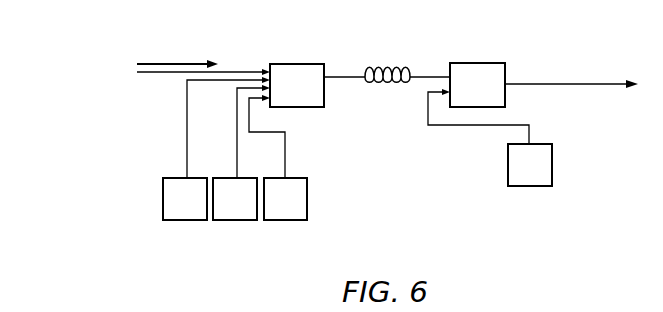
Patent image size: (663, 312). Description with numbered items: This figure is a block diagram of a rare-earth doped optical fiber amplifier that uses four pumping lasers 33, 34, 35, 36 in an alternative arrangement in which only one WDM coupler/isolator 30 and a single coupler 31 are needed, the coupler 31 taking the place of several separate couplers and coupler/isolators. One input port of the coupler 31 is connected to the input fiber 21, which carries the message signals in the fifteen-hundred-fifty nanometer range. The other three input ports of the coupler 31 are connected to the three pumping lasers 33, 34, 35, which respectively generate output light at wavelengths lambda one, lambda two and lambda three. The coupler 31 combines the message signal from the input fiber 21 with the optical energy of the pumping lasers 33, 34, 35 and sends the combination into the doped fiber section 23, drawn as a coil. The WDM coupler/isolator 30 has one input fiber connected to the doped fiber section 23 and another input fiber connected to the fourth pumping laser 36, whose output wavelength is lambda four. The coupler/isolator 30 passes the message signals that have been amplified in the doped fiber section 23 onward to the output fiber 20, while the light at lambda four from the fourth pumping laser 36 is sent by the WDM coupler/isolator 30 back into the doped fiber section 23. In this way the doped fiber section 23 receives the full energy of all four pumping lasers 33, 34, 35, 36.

The output fiber 20 is at (588, 83).
The input fiber 21 is at (162, 75).
The doped fiber section 23 is at (393, 63).
The WDM coupler/isolator 30 is at (480, 62).
The coupler 31 is at (292, 63).
The pumping laser 33 is at (163, 199).
The pumping laser 34 is at (233, 221).
The pumping laser 35 is at (307, 199).
The fourth pumping laser 36 is at (543, 143).